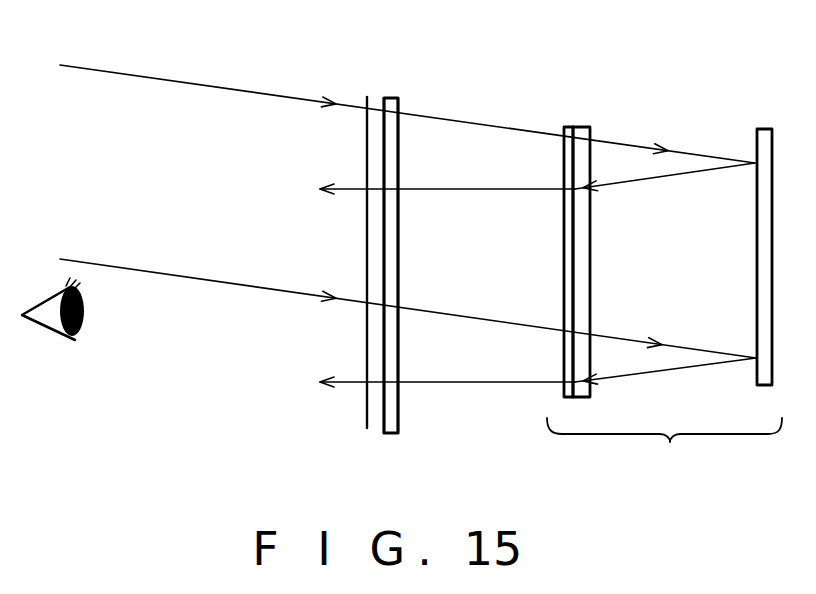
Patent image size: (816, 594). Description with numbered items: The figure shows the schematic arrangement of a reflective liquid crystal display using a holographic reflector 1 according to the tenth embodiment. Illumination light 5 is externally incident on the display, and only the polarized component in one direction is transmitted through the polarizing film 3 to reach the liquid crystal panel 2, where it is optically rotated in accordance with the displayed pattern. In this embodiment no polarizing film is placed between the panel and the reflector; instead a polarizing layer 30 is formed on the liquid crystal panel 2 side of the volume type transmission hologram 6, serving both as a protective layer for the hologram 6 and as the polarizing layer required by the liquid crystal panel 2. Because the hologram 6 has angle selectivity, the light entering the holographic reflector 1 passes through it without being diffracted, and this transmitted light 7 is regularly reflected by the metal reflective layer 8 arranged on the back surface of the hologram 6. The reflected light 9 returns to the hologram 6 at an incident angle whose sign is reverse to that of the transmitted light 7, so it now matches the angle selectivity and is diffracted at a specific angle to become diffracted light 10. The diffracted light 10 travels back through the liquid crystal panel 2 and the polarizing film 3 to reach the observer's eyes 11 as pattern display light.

The holographic reflector 1 is at (664, 451).
The liquid crystal panel 2 is at (391, 94).
The polarizing film 3 is at (366, 92).
The illumination light 5 is at (200, 88).
The volume type transmission hologram 6 is at (584, 124).
The transmitted light 7 is at (694, 154).
The metal reflective layer 8 is at (766, 127).
The reflected light 9 is at (665, 178).
The diffracted light 10 is at (487, 190).
The observer's eyes 11 is at (57, 338).
The polarizing layer 30 is at (566, 124).